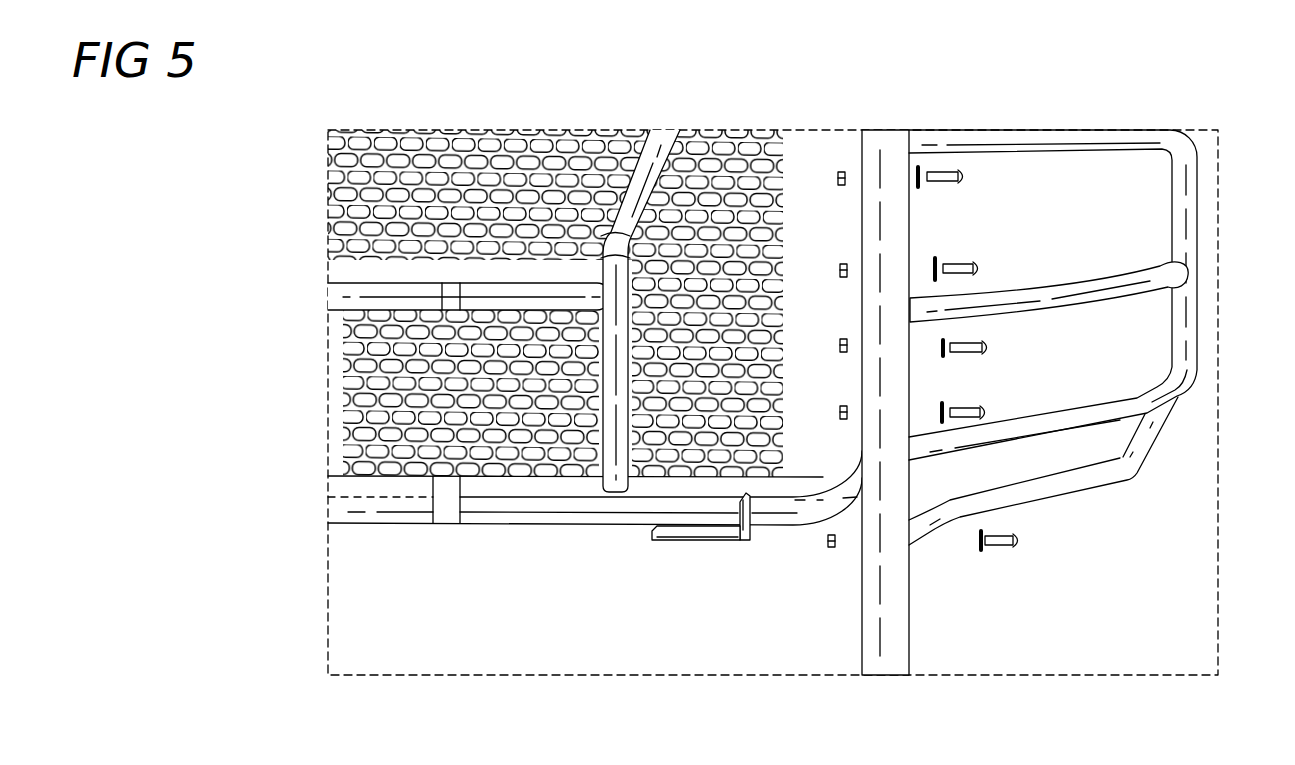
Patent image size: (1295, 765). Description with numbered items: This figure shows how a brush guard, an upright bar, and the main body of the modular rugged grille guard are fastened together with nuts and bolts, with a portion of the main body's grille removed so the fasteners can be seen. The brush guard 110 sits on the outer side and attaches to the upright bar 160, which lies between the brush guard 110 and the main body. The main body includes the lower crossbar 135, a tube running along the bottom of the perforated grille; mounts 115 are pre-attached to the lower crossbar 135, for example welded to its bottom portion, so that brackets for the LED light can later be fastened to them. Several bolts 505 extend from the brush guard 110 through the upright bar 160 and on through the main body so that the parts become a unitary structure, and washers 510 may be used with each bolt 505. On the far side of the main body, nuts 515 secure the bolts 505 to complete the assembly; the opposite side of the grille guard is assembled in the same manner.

The brush guard 110 is at (1198, 332).
The mount 115 is at (742, 545).
The lower crossbar 135 is at (535, 527).
The upright bar 160 is at (910, 637).
The bolt 505 is at (1027, 566).
The washer 510 is at (982, 552).
The nut 515 is at (831, 549).